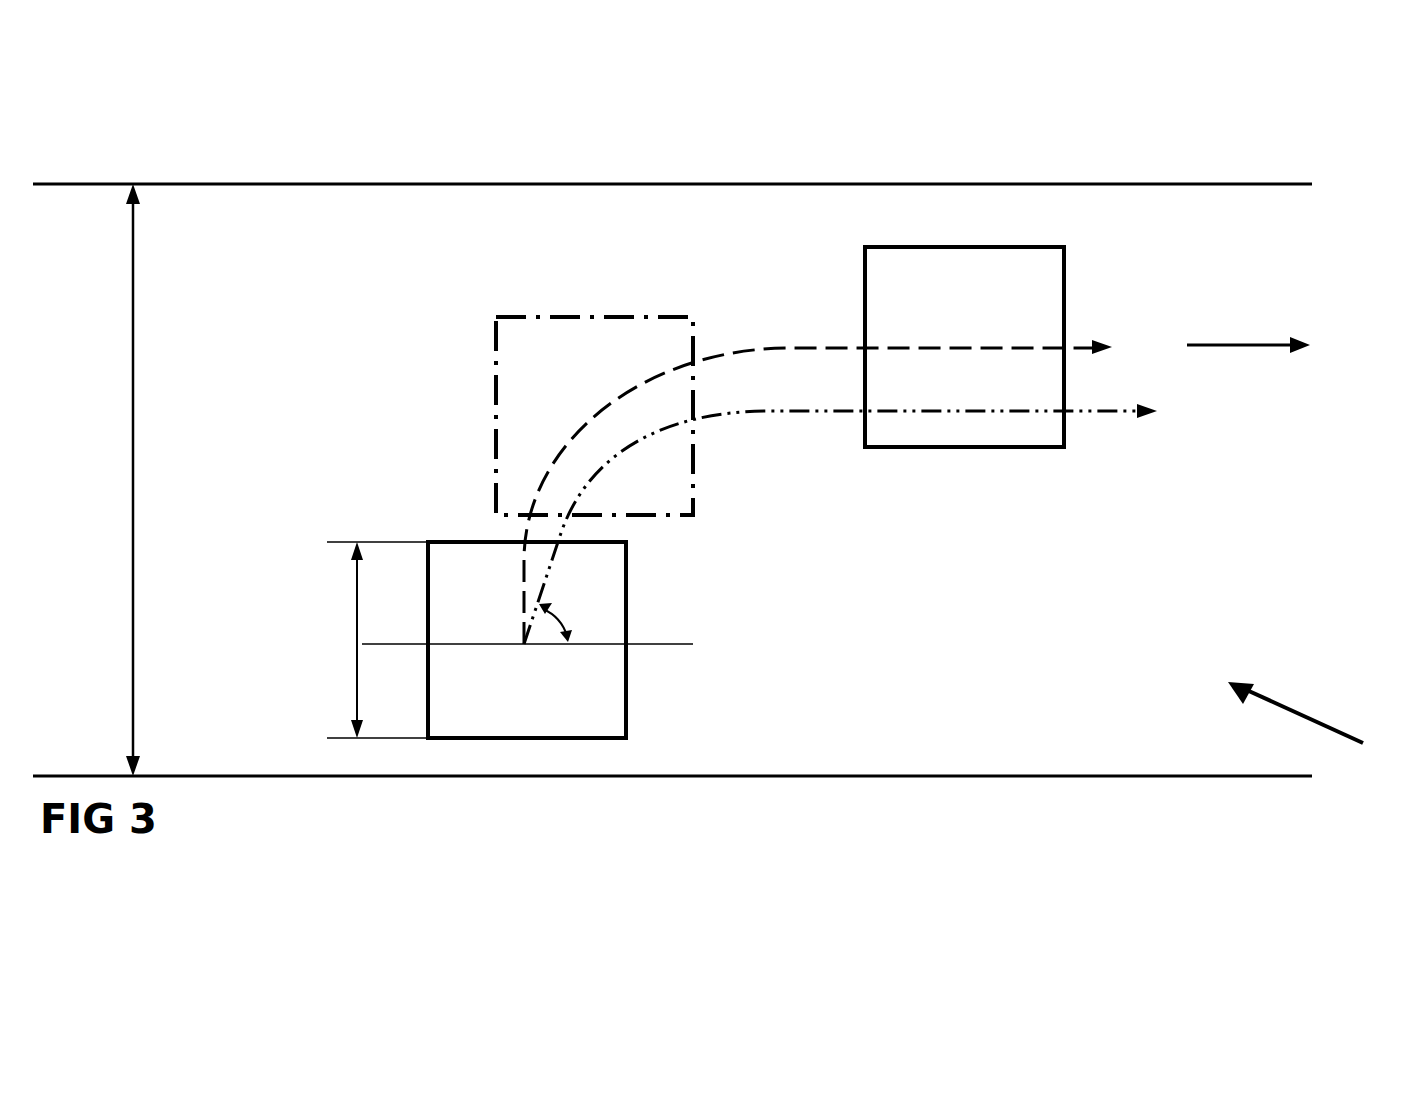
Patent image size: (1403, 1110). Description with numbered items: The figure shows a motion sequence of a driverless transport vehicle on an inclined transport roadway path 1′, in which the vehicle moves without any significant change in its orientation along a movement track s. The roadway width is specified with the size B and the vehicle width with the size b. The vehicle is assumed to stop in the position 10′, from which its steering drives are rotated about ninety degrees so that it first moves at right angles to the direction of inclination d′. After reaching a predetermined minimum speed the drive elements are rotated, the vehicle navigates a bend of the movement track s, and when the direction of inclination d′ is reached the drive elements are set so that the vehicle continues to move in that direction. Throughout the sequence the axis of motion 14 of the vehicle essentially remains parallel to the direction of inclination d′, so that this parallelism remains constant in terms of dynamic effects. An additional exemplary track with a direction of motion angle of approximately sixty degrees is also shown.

The inclined transport roadway path 1′ is at (1315, 722).
The position 10′ is at (475, 743).
The axis of motion 14 is at (680, 648).
The movement track s is at (728, 353).
The direction of inclination d′ is at (1248, 326).
The roadway width B is at (118, 480).
The vehicle width b is at (377, 640).